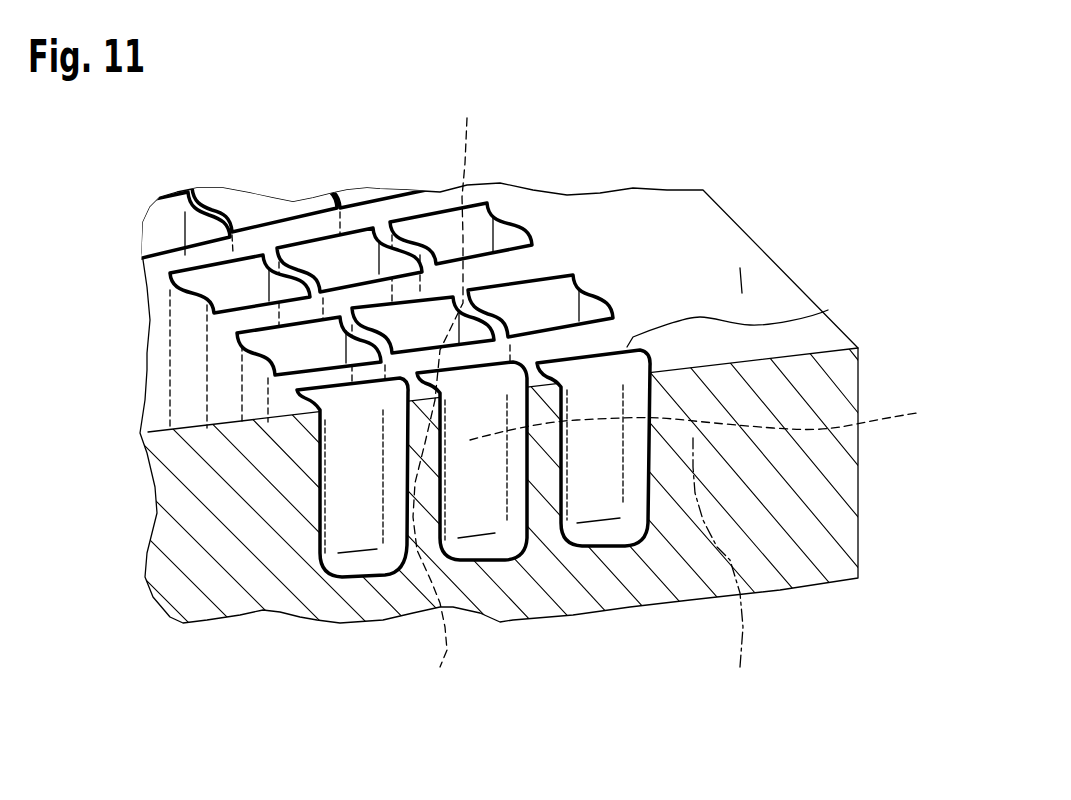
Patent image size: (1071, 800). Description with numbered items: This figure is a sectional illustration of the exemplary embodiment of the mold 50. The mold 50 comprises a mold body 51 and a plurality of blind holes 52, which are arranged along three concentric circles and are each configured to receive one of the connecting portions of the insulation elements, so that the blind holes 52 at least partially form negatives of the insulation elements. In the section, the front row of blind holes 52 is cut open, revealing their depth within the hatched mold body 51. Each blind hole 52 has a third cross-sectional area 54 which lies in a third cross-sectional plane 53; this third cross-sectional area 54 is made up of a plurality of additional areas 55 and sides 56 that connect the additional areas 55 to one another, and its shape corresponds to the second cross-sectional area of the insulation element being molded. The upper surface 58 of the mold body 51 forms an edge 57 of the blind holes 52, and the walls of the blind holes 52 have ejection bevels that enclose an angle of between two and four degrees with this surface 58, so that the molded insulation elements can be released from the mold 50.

The mold 50 is at (826, 140).
The mold body 51 is at (697, 253).
The blind holes 52 is at (350, 577).
The third cross-sectional plane 53 is at (723, 571).
The third cross-sectional area 54 is at (507, 555).
The additional areas 55 is at (443, 430).
The sides 56 is at (680, 394).
The edge 57 is at (828, 310).
The surface 58 is at (743, 290).